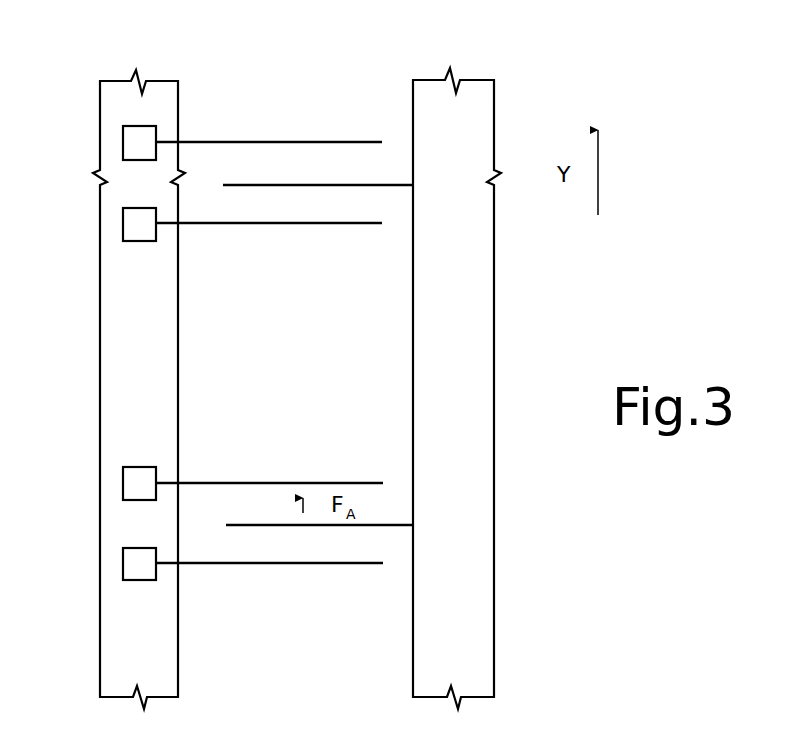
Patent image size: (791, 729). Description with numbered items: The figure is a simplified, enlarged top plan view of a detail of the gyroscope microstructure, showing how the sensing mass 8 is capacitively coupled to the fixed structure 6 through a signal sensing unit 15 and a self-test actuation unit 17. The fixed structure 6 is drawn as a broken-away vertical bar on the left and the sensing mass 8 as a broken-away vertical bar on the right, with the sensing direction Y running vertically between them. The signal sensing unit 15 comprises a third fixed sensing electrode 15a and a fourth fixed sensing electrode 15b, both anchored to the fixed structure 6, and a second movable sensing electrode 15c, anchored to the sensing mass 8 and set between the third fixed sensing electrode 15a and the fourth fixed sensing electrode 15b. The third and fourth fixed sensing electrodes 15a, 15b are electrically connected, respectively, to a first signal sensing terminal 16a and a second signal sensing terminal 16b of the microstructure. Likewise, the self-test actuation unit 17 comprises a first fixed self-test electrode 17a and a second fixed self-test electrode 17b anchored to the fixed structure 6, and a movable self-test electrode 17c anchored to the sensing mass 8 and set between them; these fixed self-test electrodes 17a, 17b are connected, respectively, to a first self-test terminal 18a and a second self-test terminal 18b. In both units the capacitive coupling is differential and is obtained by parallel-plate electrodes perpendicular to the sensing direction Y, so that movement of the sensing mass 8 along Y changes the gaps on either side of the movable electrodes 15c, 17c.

The fixed structure 6 is at (108, 288).
The sensing mass 8 is at (488, 120).
The signal sensing unit 15 is at (284, 160).
The third fixed sensing electrode 15a is at (236, 142).
The fourth fixed sensing electrode 15b is at (218, 225).
The second movable sensing electrode 15c is at (384, 187).
The first signal sensing terminal 16a is at (122, 143).
The second signal sensing terminal 16b is at (122, 223).
The self-test actuation unit 17 is at (284, 504).
The first fixed self-test electrode 17a is at (238, 482).
The second fixed self-test electrode 17b is at (220, 565).
The movable self-test electrode 17c is at (386, 527).
The first self-test terminal 18a is at (122, 483).
The second self-test terminal 18b is at (122, 563).